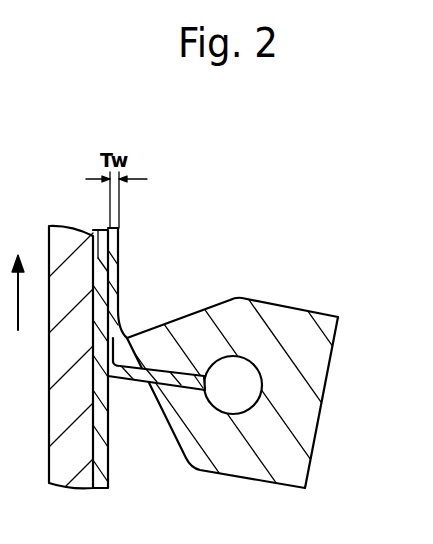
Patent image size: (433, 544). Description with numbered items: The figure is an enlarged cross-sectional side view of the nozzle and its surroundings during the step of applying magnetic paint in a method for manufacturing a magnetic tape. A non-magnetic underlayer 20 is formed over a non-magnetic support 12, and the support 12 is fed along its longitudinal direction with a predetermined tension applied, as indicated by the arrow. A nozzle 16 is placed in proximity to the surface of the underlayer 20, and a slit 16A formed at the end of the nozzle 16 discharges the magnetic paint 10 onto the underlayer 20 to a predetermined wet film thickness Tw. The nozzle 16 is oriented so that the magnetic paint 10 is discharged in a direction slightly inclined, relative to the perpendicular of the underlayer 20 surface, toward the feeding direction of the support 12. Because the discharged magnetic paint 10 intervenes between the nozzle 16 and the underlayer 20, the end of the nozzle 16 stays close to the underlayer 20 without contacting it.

The magnetic paint 10 is at (122, 241).
The non-magnetic support 12 is at (57, 490).
The nozzle 16 is at (288, 306).
The slit 16A is at (134, 372).
The non-magnetic underlayer 20 is at (97, 490).